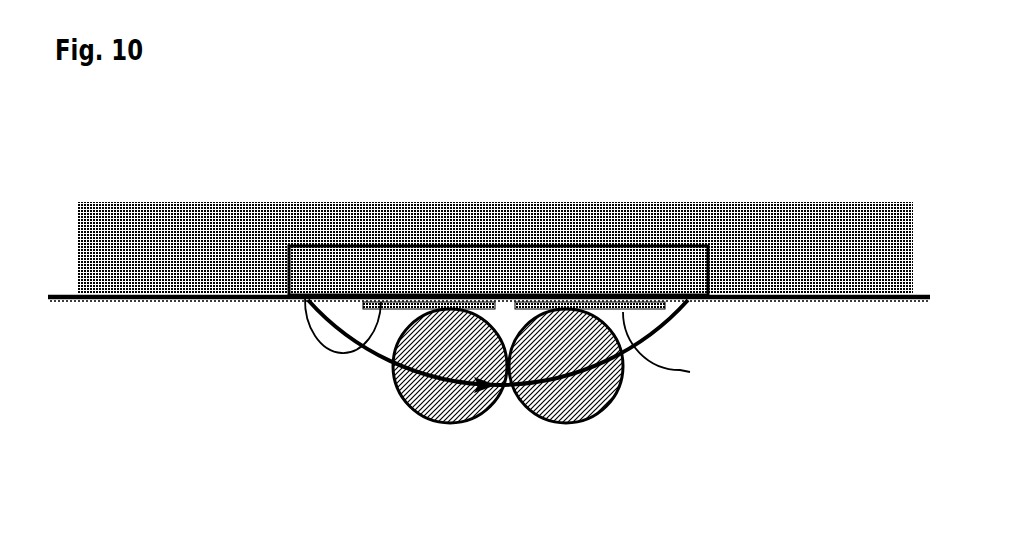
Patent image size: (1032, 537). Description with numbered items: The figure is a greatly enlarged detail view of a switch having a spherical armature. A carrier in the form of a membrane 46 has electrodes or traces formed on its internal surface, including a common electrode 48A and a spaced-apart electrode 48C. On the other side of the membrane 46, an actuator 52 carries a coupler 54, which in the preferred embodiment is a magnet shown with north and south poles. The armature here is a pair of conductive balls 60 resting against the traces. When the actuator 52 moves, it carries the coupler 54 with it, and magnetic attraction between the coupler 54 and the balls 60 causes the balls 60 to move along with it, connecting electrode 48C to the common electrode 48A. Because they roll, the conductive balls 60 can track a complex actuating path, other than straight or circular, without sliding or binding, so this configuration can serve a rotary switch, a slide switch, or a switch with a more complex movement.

The membrane 46 is at (793, 297).
The common electrode 48A is at (623, 346).
The electrode 48C is at (342, 354).
The actuator 52 is at (700, 220).
The coupler 54 is at (707, 275).
The conductive balls 60 is at (460, 423).